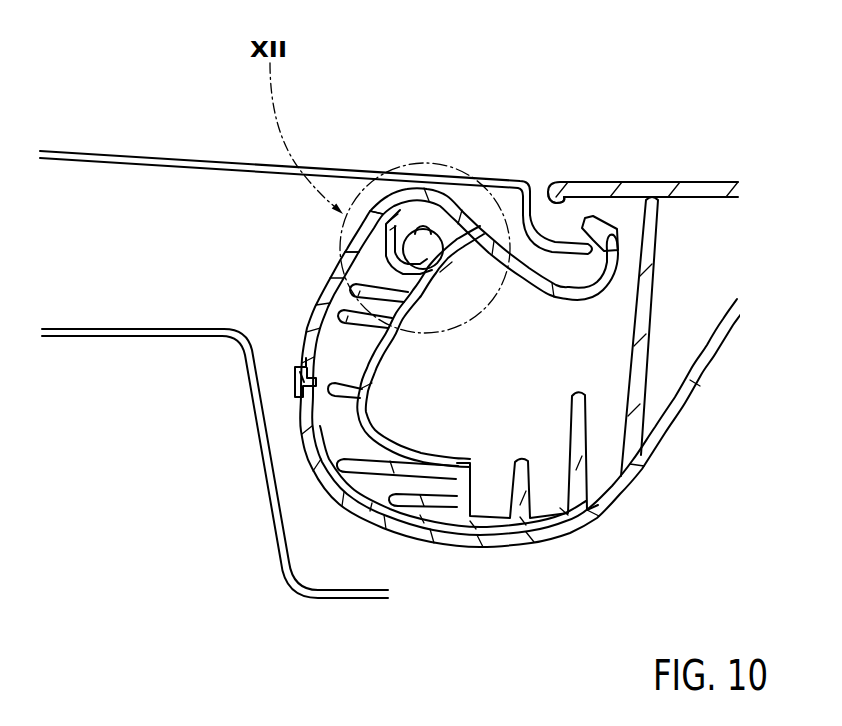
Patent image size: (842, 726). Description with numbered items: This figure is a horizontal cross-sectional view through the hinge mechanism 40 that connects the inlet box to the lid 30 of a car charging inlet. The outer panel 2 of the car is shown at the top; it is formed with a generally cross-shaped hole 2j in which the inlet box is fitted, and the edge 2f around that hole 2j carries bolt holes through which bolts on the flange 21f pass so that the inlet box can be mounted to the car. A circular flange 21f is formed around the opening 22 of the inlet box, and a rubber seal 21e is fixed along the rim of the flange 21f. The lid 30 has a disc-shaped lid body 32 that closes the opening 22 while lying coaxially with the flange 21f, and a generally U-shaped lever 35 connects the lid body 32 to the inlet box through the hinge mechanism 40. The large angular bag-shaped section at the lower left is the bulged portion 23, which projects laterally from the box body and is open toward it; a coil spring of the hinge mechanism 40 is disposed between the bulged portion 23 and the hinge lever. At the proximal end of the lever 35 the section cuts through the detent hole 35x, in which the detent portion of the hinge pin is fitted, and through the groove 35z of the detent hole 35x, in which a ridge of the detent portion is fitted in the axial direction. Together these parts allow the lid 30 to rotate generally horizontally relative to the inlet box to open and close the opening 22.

The outer panel 2 is at (316, 320).
The edge 2f is at (587, 256).
The hole 2j is at (603, 265).
The seal 21e is at (552, 188).
The flange 21f is at (590, 216).
The opening 22 is at (624, 275).
The bulged portion 23 is at (480, 366).
The lid 30 is at (618, 144).
The lid body 32 is at (697, 189).
The lever 35 is at (531, 481).
The detent hole 35x is at (430, 230).
The groove 35z is at (385, 262).
The hinge mechanism 40 is at (375, 206).